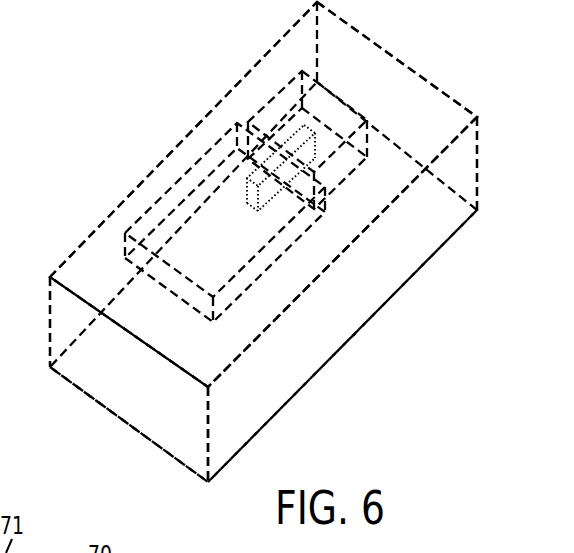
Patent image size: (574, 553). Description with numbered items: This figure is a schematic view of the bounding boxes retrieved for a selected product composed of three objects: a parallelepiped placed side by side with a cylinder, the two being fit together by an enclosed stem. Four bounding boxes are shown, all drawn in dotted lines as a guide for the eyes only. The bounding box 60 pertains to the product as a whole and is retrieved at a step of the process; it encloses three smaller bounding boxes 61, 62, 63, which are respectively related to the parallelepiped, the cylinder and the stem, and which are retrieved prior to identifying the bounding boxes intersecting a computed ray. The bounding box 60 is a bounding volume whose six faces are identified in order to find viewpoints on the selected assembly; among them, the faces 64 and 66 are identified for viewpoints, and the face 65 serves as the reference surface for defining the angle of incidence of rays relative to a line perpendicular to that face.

The bounding box 60 is at (349, 337).
The bounding box 61 is at (207, 150).
The bounding box 62 is at (283, 88).
The bounding box 63 is at (247, 203).
The face 64 is at (414, 245).
The face 65 is at (102, 375).
The face 66 is at (97, 270).